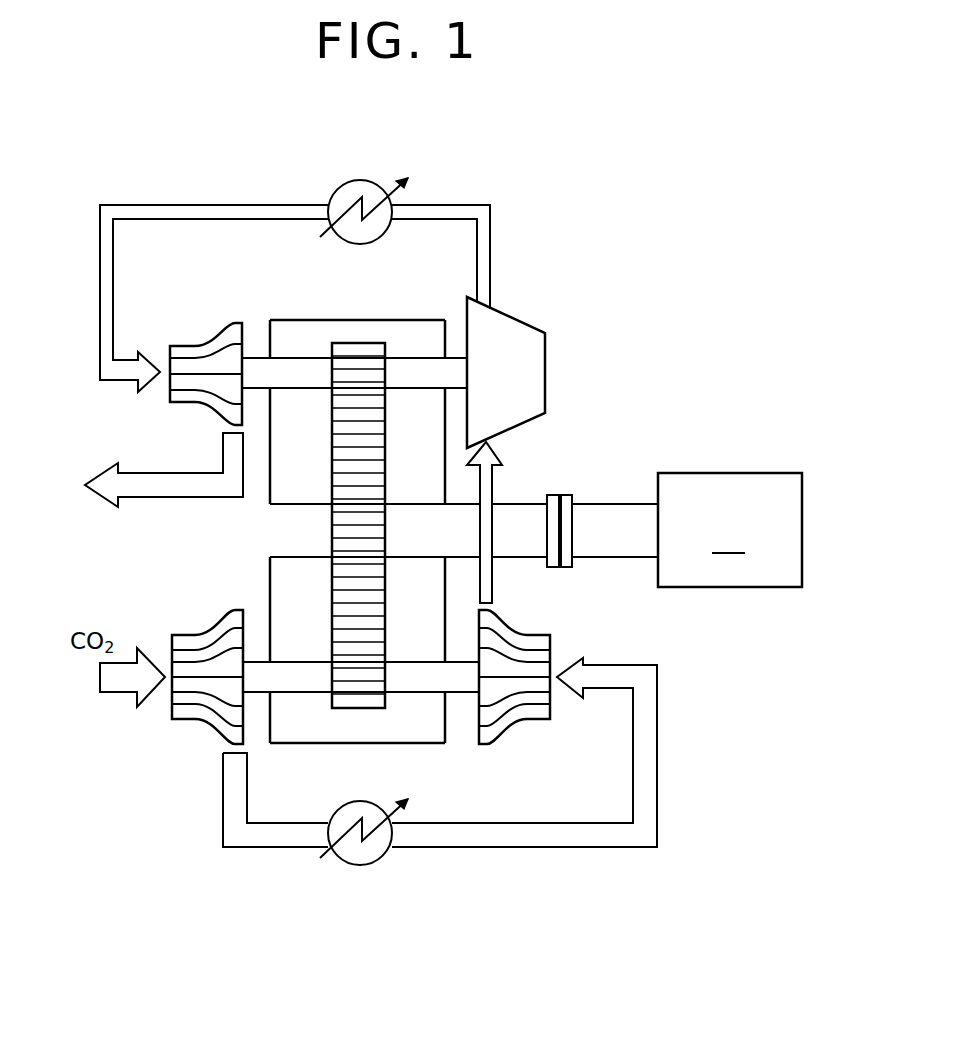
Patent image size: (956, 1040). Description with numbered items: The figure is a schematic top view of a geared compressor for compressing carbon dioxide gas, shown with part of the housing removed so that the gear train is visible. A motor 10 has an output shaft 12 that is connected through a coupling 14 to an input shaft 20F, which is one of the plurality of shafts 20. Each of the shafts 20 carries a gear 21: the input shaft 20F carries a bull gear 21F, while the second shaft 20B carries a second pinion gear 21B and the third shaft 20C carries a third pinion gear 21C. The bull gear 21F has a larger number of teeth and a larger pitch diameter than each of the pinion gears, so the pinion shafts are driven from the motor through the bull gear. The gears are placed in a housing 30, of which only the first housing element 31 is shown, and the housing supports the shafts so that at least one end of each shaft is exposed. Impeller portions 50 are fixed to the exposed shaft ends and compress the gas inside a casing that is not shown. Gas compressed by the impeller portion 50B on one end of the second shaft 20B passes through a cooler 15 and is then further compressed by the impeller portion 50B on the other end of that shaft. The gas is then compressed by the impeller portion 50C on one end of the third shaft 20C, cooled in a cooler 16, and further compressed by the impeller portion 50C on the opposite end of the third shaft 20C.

The motor 10 is at (738, 473).
The output shaft 12 is at (605, 503).
The coupling 14 is at (567, 567).
The cooler 15 is at (360, 800).
The cooler 16 is at (385, 228).
The shafts 20 is at (398, 531).
The third shaft 20C is at (313, 356).
The input shaft 20F is at (520, 504).
The second shaft 20B is at (412, 695).
The gear 21 is at (258, 545).
The third pinion gear 21C is at (353, 342).
The bull gear 21F is at (332, 600).
The second pinion gear 21B is at (338, 710).
The housing 30 is at (524, 348).
The first housing element 31 is at (415, 317).
The impeller portions 50 is at (429, 531).
The impeller portion 50C is at (622, 313).
The impeller portion 50B is at (203, 720).